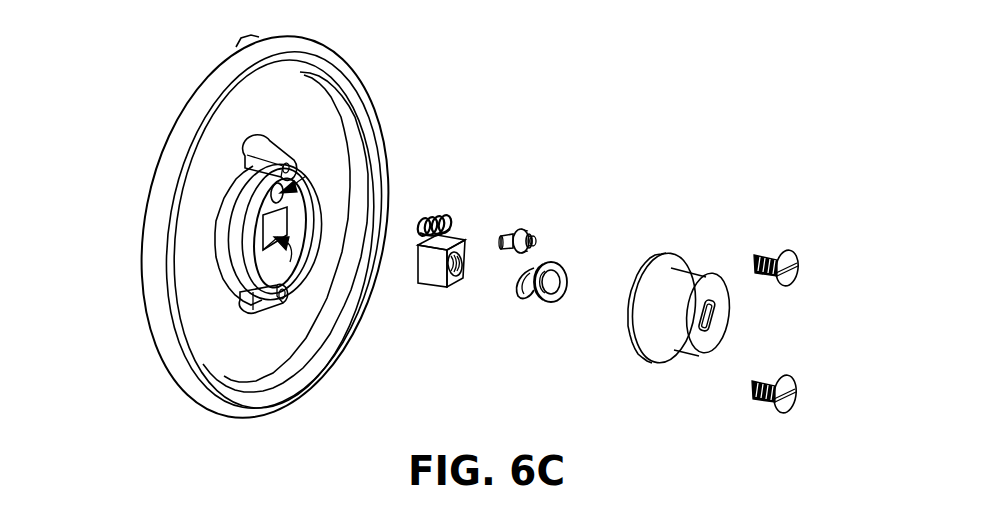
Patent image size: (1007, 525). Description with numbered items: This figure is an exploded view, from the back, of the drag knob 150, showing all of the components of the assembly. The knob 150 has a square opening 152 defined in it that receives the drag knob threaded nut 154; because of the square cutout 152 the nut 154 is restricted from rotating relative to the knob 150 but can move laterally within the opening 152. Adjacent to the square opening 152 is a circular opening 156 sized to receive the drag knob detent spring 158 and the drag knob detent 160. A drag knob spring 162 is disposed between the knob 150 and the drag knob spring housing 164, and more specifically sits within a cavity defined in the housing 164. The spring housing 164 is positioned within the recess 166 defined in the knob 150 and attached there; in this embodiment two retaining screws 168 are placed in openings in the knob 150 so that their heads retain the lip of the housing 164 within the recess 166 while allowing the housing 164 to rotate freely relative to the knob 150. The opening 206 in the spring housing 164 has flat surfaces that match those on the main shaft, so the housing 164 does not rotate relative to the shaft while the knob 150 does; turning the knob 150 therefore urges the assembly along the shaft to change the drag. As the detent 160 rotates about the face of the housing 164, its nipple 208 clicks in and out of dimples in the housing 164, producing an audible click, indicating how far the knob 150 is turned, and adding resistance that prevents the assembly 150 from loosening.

The drag knob 150 is at (186, 103).
The square opening 152 is at (278, 284).
The drag knob threaded nut 154 is at (418, 266).
The circular opening 156 is at (295, 169).
The drag knob detent spring 158 is at (431, 214).
The drag knob detent 160 is at (534, 241).
The drag knob spring 162 is at (553, 305).
The drag knob spring housing 164 is at (680, 326).
The recess 166 is at (302, 222).
The retaining screws 168 is at (797, 388).
The opening 206 is at (718, 312).
The nipple 208 is at (534, 243).